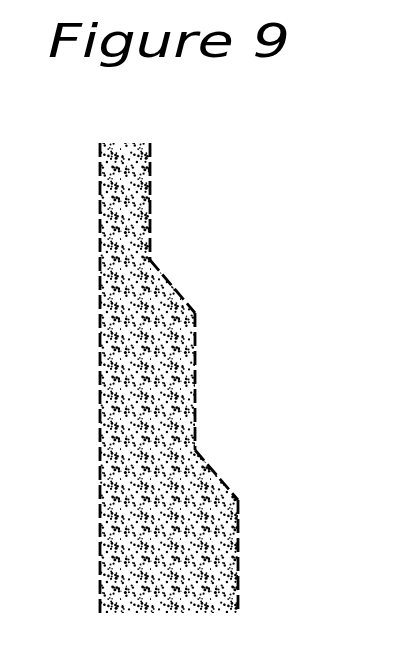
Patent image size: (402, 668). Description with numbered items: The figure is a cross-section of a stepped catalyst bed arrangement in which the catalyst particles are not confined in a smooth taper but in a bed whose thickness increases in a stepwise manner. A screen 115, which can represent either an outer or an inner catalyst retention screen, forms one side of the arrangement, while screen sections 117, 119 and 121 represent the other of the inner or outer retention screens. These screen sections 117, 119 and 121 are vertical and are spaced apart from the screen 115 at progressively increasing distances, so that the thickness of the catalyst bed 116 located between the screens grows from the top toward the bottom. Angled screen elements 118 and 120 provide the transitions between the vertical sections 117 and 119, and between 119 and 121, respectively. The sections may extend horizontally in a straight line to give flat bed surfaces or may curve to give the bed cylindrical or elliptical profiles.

The screen 115 is at (58, 378).
The catalyst bed 116 is at (127, 378).
The screen section 117 is at (204, 201).
The angled screen element 118 is at (210, 286).
The screen section 119 is at (239, 381).
The angled screen element 120 is at (252, 469).
The screen section 121 is at (281, 556).